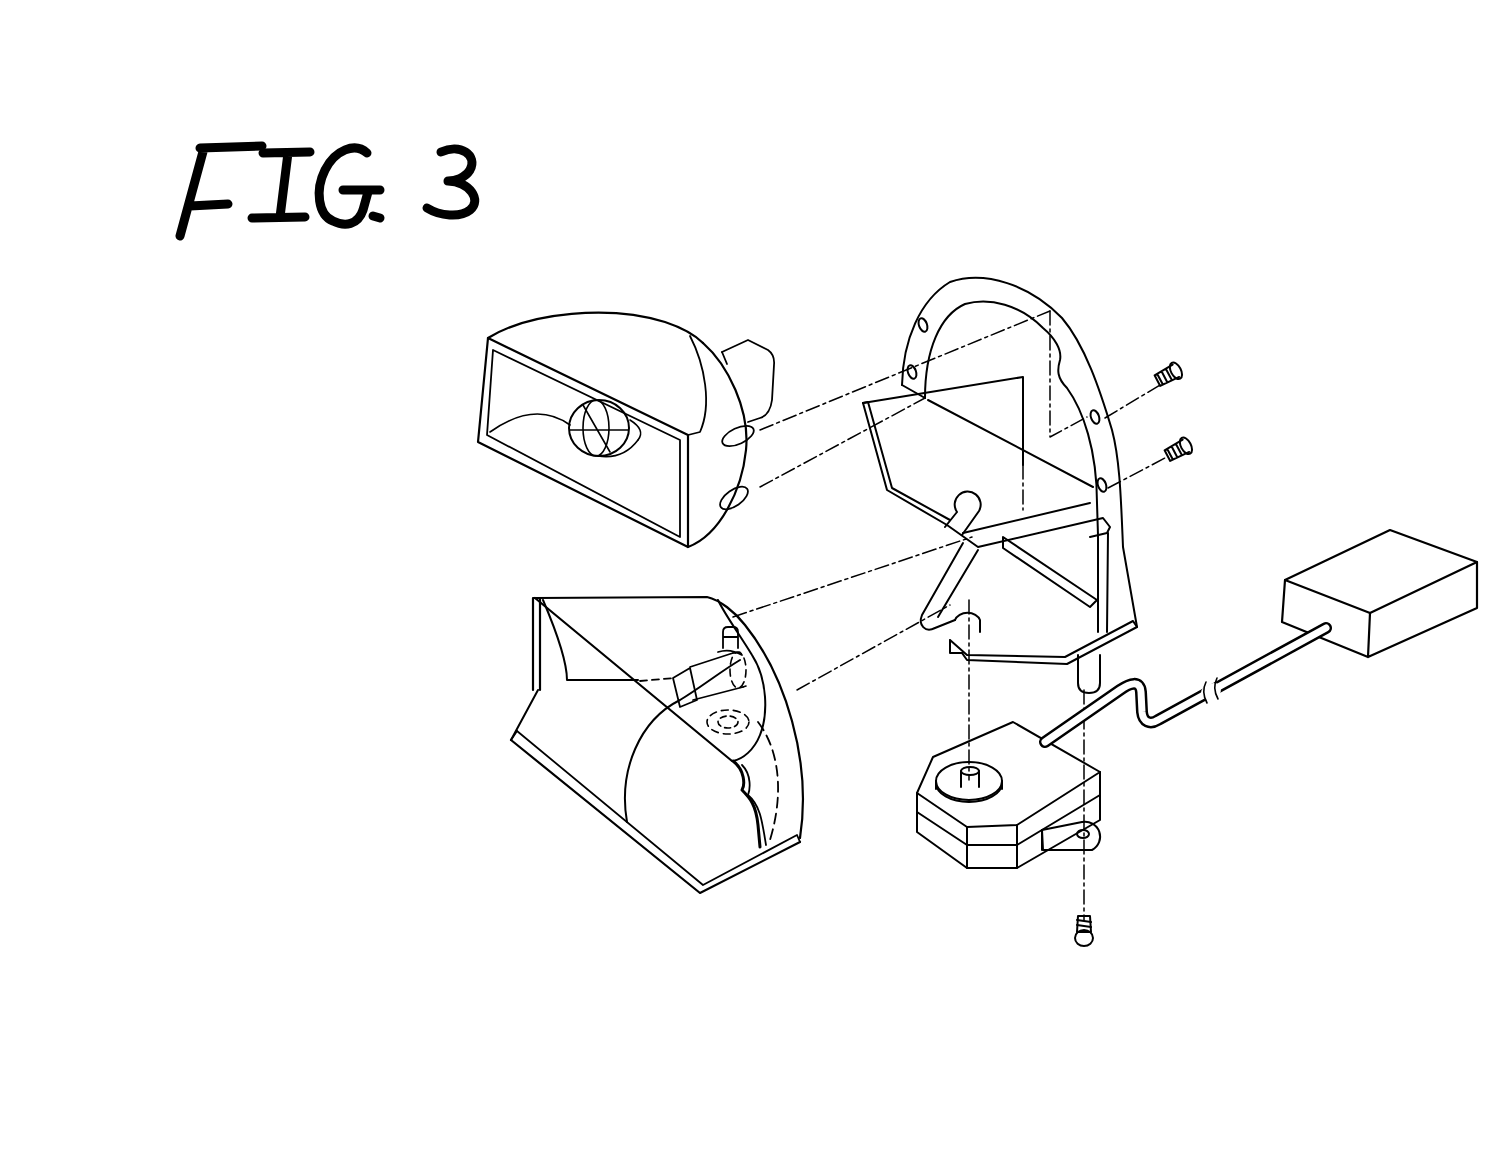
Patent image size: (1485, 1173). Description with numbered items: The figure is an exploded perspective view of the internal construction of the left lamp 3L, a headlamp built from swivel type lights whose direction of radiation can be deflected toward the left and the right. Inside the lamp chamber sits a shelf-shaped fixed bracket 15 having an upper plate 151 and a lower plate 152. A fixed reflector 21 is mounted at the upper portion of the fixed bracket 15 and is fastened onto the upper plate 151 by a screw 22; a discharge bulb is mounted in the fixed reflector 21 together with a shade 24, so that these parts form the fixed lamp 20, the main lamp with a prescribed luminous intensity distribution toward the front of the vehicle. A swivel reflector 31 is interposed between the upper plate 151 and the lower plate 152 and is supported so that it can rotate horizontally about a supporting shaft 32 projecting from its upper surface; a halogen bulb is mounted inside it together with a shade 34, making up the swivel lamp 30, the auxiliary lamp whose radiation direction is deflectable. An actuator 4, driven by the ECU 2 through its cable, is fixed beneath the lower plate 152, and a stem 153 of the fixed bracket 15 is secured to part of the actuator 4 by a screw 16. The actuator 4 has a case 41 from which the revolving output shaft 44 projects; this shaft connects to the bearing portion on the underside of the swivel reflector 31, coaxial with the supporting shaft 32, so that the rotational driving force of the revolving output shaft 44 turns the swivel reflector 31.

The left lamp 3L is at (1192, 275).
The ECU 2 is at (1352, 562).
The actuator 4 is at (1105, 793).
The fixed bracket 15 is at (1088, 353).
The screw 16 is at (1093, 935).
The fixed lamp 20 is at (495, 320).
The fixed reflector 21 is at (612, 347).
The screw 22 is at (1183, 380).
The shade 24 is at (590, 447).
The swivel lamp 30 is at (575, 808).
The swivel reflector 31 is at (607, 622).
The supporting shaft 32 is at (727, 625).
The shade 34 is at (627, 820).
The case 41 is at (995, 858).
The revolving output shaft 44 is at (972, 785).
The upper plate 151 is at (897, 460).
The lower plate 152 is at (950, 595).
The stem 153 is at (1075, 675).